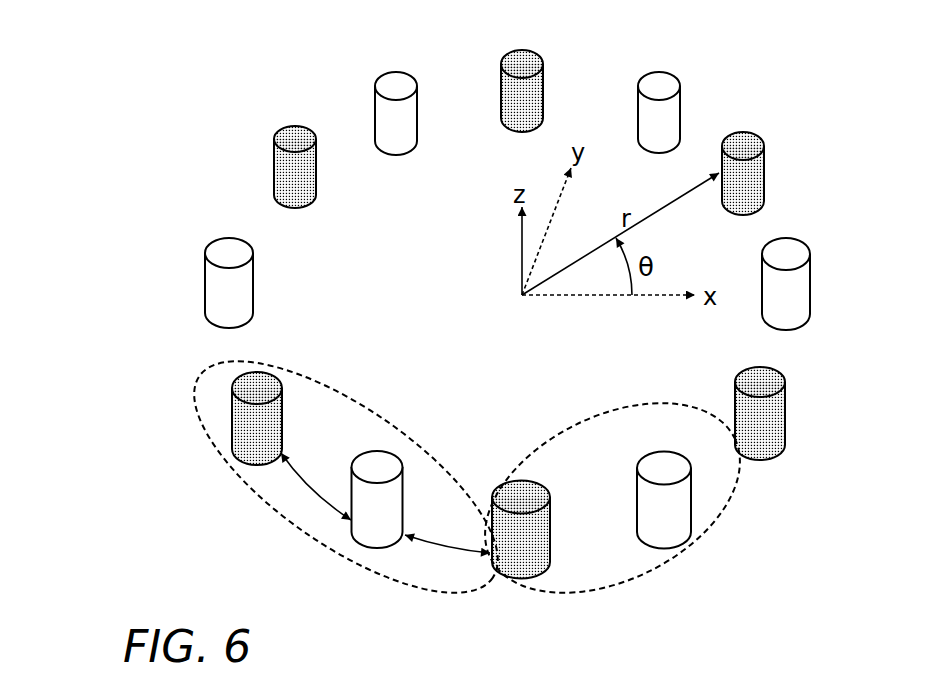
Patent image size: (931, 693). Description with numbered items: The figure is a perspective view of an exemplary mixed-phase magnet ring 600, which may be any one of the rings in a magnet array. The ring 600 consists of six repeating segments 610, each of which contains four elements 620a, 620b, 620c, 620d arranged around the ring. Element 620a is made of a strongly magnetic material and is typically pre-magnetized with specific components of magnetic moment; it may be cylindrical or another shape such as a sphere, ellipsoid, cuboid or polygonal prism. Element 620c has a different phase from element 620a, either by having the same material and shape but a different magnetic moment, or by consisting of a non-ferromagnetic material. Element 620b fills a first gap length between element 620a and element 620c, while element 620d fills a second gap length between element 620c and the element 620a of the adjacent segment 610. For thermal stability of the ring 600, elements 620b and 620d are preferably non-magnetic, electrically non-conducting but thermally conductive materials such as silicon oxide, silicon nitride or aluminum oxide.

The mixed-phase magnet ring 600 is at (338, 92).
The repeating segment 610 is at (200, 377).
The element 620a is at (258, 387).
The element 620b is at (307, 490).
The element 620c is at (377, 465).
The element 620d is at (445, 550).